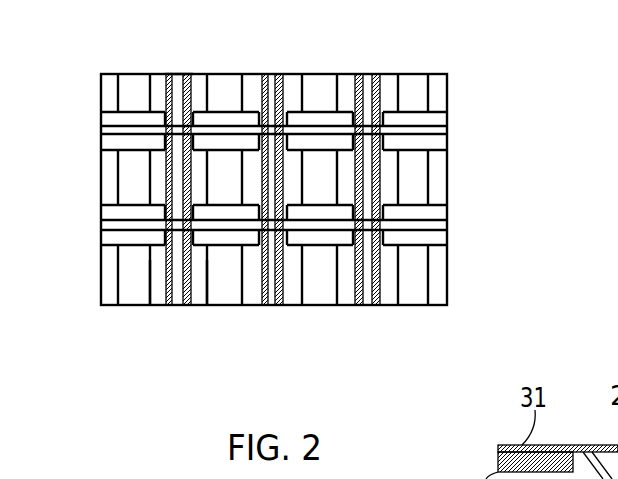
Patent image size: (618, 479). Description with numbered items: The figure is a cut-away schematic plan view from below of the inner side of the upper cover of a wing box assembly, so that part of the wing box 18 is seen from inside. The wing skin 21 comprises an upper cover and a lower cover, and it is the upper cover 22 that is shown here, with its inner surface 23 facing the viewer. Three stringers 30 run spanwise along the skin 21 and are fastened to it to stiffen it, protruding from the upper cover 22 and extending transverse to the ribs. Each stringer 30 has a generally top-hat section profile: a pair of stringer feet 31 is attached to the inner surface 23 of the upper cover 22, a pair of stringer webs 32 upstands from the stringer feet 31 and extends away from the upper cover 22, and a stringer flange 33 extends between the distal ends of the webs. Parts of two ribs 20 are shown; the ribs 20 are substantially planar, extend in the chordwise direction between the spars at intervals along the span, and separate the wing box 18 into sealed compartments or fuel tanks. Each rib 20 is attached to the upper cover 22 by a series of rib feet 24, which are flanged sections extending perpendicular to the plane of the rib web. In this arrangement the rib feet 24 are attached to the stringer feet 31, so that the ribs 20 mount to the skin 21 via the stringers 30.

The wing box 18 is at (525, 93).
The rib 20 is at (447, 128).
The skin 21 is at (413, 83).
The upper cover 22 is at (133, 92).
The inner surface 23 is at (138, 292).
The rib foot 24 is at (102, 215).
The stringer 30 is at (197, 74).
The stringer foot 31 is at (158, 307).
The stringer web 32 is at (170, 307).
The stringer flange 33 is at (174, 74).